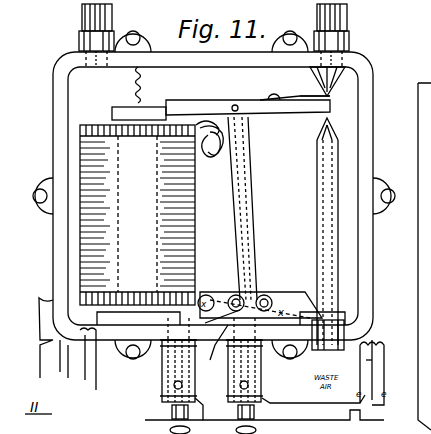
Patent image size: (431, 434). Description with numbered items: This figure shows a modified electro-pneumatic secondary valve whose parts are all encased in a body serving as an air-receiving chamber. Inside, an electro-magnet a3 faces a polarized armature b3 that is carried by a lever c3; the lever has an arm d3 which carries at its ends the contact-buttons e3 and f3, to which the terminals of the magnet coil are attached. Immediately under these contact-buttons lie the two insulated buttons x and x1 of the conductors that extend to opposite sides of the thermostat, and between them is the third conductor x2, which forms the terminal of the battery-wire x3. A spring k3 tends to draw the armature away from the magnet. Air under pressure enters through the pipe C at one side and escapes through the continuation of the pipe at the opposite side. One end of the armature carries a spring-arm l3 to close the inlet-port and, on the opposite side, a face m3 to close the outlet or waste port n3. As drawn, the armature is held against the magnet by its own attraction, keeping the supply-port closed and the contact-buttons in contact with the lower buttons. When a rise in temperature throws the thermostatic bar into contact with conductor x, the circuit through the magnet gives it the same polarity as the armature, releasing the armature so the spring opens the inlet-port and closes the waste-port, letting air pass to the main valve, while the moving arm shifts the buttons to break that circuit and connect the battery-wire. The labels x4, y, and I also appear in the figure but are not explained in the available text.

The pipe C is at (215, 35).
The spring k3 is at (132, 84).
The polarized armature b3 is at (155, 114).
The lever c3 is at (248, 104).
The spring-arm l3 is at (304, 86).
The face m3 is at (306, 132).
The waste port n3 is at (320, 161).
The electro-magnet a3 is at (137, 215).
The arm d3 is at (253, 212).
The contact-button e3 is at (270, 296).
The contact-button f3 is at (236, 295).
The insulated button x is at (326, 373).
The insulated button x1 is at (264, 400).
The third conductor x2 is at (217, 343).
The battery-wire x3 is at (67, 338).
The wire x4 is at (222, 321).
The wire y is at (363, 360).
The battery I is at (378, 370).